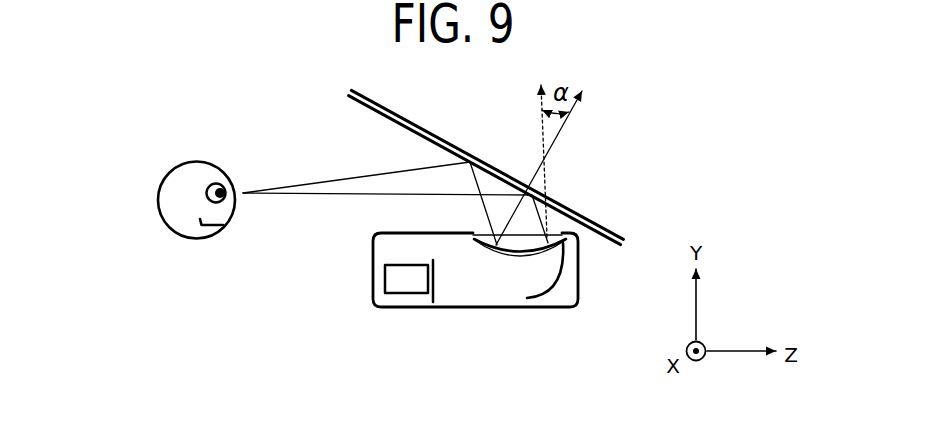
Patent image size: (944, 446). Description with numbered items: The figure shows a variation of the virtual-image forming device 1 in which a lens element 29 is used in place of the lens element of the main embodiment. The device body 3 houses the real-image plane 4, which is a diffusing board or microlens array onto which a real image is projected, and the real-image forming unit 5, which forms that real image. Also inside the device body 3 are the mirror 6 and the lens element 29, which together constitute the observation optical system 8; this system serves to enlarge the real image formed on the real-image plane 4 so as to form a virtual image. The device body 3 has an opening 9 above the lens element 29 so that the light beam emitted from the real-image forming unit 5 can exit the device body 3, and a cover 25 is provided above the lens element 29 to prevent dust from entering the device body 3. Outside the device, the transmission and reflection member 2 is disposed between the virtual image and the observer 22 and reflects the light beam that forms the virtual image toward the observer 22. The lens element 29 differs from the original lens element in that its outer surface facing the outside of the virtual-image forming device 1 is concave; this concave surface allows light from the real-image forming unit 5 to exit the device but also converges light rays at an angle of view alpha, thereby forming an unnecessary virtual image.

The virtual-image forming device 1 is at (483, 282).
The transmission and reflection member 2 is at (425, 132).
The device body 3 is at (373, 262).
The real-image plane 4 is at (434, 290).
The real-image forming unit 5 is at (386, 291).
The mirror 6 is at (560, 270).
The observation optical system 8 is at (553, 295).
The opening 9 is at (468, 252).
The observer 22 is at (158, 203).
The cover 25 is at (555, 236).
The lens element 29 is at (565, 246).